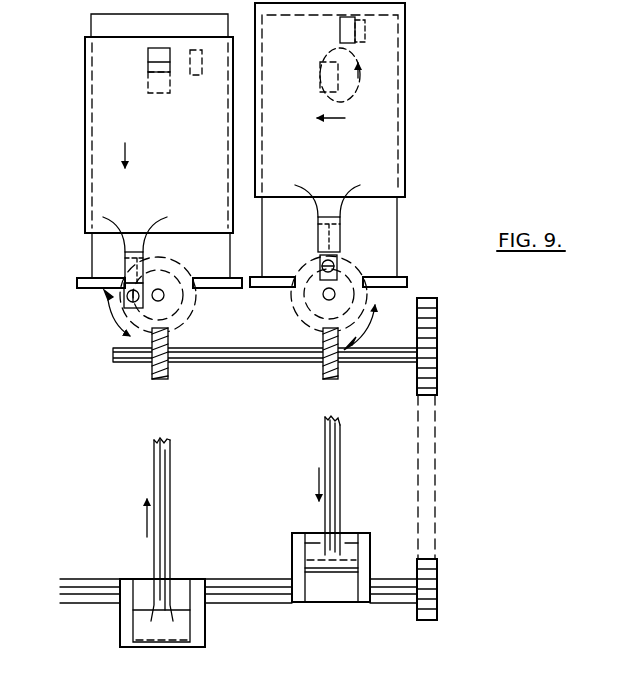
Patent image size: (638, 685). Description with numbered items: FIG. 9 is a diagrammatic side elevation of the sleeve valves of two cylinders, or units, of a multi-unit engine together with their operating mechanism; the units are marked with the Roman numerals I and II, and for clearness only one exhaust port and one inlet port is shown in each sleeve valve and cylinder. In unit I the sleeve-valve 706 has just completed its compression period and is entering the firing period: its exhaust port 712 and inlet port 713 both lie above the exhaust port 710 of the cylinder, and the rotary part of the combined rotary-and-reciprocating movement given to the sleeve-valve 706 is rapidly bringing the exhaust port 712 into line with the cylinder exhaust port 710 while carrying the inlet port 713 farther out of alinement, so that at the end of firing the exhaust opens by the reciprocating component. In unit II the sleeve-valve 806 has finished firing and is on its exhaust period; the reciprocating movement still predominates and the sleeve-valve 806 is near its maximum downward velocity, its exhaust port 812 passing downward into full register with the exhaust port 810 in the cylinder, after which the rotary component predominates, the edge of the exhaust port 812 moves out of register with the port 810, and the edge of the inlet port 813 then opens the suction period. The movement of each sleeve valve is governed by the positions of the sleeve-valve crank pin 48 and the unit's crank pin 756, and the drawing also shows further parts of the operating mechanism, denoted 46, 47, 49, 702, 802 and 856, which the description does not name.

The sleeve-valve 806 is at (85, 110).
The exhaust port 812 is at (148, 59).
The exhaust port 810 is at (160, 93).
The inlet port 813 is at (196, 77).
The second base 802 is at (90, 251).
The exhaust port 712 is at (340, 33).
The inlet port 713 is at (365, 38).
The exhaust port 710 is at (330, 88).
The sleeve-valve 706 is at (406, 118).
The first base 702 is at (400, 228).
The chuck 49 is at (318, 241).
The sleeve-valve crank pin 48 is at (340, 262).
The wheel 47 is at (300, 315).
The worm shaft 46 is at (323, 377).
The crank pin 756 is at (305, 550).
The vessel 856 is at (183, 630).